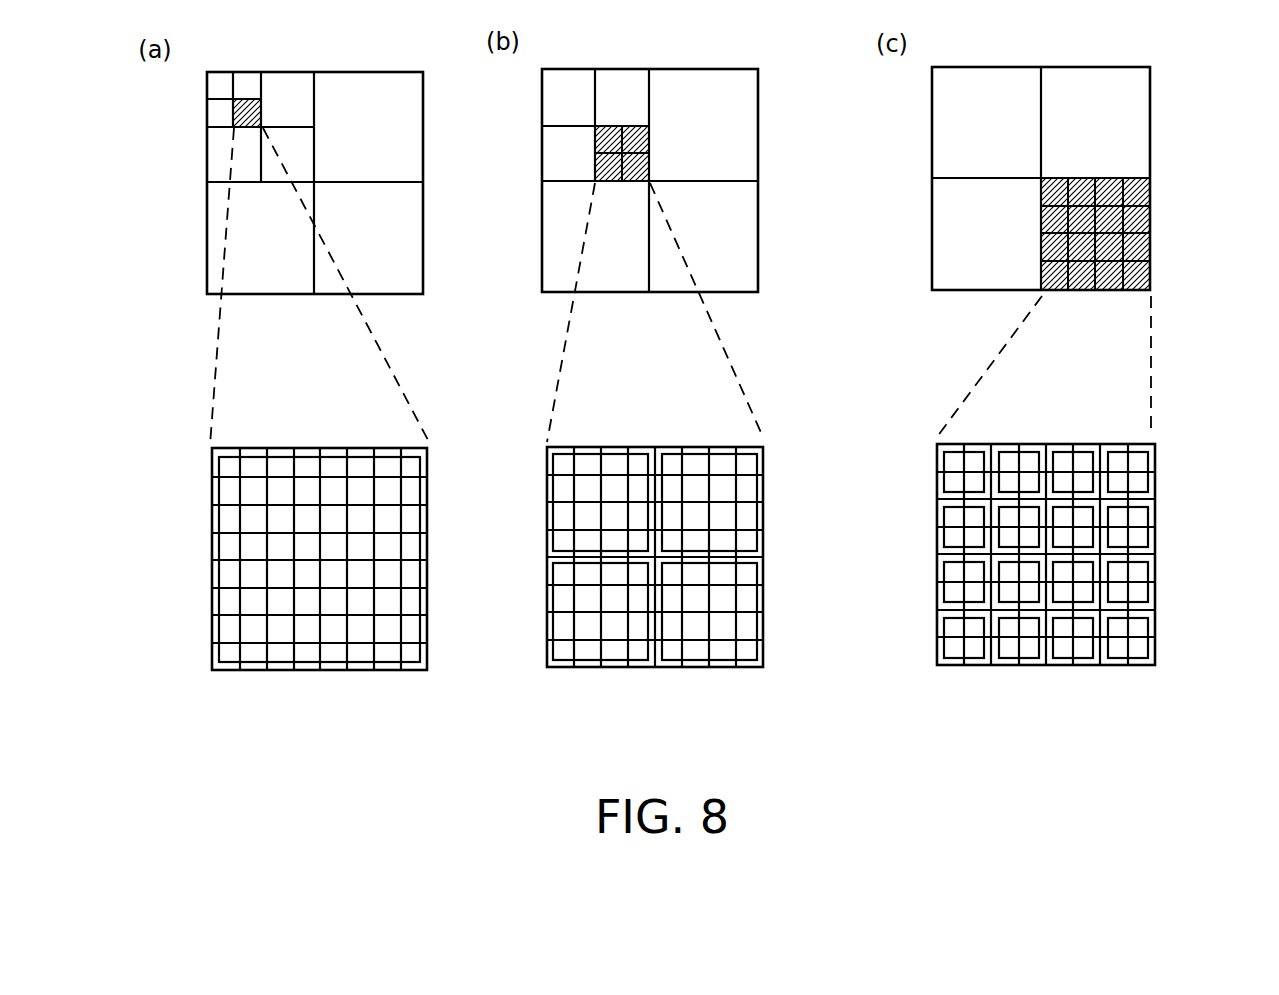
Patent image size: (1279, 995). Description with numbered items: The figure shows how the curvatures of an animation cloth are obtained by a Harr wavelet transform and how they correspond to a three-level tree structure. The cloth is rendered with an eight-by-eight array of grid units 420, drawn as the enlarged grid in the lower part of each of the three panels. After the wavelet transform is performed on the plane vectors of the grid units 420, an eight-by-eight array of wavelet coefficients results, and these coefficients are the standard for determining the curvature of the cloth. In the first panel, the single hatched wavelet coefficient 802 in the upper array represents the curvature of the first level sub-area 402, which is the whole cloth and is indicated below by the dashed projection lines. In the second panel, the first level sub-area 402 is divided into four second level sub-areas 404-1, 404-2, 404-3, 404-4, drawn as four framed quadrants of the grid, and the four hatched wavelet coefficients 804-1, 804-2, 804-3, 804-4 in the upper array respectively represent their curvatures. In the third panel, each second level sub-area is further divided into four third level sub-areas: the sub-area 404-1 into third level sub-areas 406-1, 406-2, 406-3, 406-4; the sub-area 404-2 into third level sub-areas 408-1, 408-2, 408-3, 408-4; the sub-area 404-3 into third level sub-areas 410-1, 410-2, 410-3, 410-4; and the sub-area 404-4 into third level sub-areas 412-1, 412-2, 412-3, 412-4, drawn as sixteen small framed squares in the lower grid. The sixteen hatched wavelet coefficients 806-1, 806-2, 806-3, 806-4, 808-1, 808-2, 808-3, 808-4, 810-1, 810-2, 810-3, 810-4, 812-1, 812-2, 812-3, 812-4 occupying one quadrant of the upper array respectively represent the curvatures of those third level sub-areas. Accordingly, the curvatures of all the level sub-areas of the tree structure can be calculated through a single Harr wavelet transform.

The wavelet coefficient 802 is at (263, 111).
The wavelet coefficient 804-1 is at (608, 125).
The wavelet coefficient 804-2 is at (649, 138).
The wavelet coefficient 804-3 is at (595, 166).
The wavelet coefficient 804-4 is at (649, 173).
The wavelet coefficient 806-1 is at (1050, 180).
The wavelet coefficient 806-2 is at (1080, 178).
The wavelet coefficient 806-3 is at (1042, 216).
The wavelet coefficient 806-4 is at (1042, 226).
The wavelet coefficient 808-1 is at (1110, 178).
The wavelet coefficient 808-2 is at (1137, 178).
The wavelet coefficient 808-3 is at (1152, 194).
The wavelet coefficient 808-4 is at (1152, 220).
The wavelet coefficient 810-1 is at (1042, 247).
The wavelet coefficient 810-2 is at (1042, 256).
The wavelet coefficient 810-3 is at (1042, 273).
The wavelet coefficient 810-4 is at (1083, 292).
The wavelet coefficient 812-1 is at (1152, 242).
The wavelet coefficient 812-2 is at (1152, 254).
The wavelet coefficient 812-3 is at (1108, 292).
The wavelet coefficient 812-4 is at (1152, 275).
The first level sub-area 402 is at (306, 454).
The second level sub-area 404-1 is at (588, 453).
The second level sub-area 404-2 is at (697, 453).
The second level sub-area 404-3 is at (588, 662).
The second level sub-area 404-4 is at (695, 662).
The third level sub-area 406-1 is at (953, 450).
The third level sub-area 406-2 is at (1025, 450).
The third level sub-area 406-3 is at (937, 538).
The third level sub-area 406-4 is at (987, 520).
The third level sub-area 408-1 is at (1082, 450).
The third level sub-area 408-2 is at (1138, 450).
The third level sub-area 408-3 is at (1093, 517).
The third level sub-area 408-4 is at (1147, 537).
The third level sub-area 410-1 is at (937, 589).
The third level sub-area 410-2 is at (997, 573).
The third level sub-area 410-3 is at (973, 660).
The third level sub-area 410-4 is at (1027, 660).
The third level sub-area 412-1 is at (1093, 573).
The third level sub-area 412-2 is at (1147, 590).
The third level sub-area 412-3 is at (1080, 660).
The third level sub-area 412-4 is at (1135, 660).
The grid units 420 is at (212, 450).